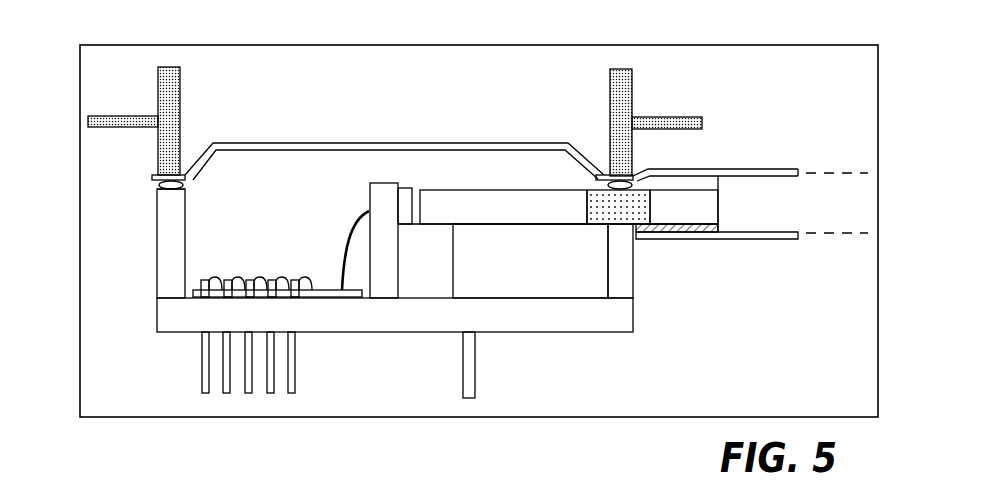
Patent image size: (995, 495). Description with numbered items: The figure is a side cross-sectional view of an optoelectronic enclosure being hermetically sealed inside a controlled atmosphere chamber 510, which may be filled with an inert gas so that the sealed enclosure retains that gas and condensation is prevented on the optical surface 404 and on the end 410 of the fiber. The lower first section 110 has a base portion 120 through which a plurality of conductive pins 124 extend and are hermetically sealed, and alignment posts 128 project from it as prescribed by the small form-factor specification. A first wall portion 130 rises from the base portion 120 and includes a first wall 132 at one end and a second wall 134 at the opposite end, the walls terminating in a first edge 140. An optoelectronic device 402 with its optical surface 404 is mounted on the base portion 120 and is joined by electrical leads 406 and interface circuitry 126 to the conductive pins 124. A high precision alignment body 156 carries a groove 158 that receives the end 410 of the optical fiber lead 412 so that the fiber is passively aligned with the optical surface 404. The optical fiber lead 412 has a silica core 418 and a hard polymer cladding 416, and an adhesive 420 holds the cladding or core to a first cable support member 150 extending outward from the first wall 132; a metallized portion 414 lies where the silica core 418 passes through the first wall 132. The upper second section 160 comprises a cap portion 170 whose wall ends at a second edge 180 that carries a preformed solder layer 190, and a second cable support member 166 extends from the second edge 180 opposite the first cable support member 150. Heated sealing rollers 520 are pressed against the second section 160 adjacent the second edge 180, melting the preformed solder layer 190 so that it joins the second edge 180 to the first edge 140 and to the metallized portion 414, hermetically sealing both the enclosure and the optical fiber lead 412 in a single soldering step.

The controlled atmosphere chamber 510 is at (155, 417).
The heated sealing rollers 520 is at (158, 108).
The first section 110 is at (131, 306).
The base portion 120 is at (162, 313).
The conductive pins 124 is at (288, 382).
The interface circuitry 126 is at (323, 290).
The alignment posts 128 is at (462, 345).
The first wall portion 130 is at (152, 207).
The first wall 132 is at (625, 290).
The second wall 134 is at (170, 263).
The first edge 140 is at (170, 191).
The first cable support member 150 is at (758, 240).
The high precision alignment body 156 is at (541, 285).
The groove 158 is at (473, 218).
The second section 160 is at (353, 126).
The second cable support member 166 is at (738, 170).
The cap portion 170 is at (410, 140).
The second edge 180 is at (150, 177).
The preformed solder layer 190 is at (187, 184).
The optoelectronic device 402 is at (369, 195).
The optical surface 404 is at (407, 220).
The electrical leads 406 is at (350, 229).
The end of the optical fiber lead 410 is at (483, 215).
The optical fiber lead 412 is at (828, 173).
The metallized portion 414 is at (620, 207).
The hard polymer cladding 416 is at (708, 204).
The silica core 418 is at (503, 207).
The adhesive 420 is at (668, 228).